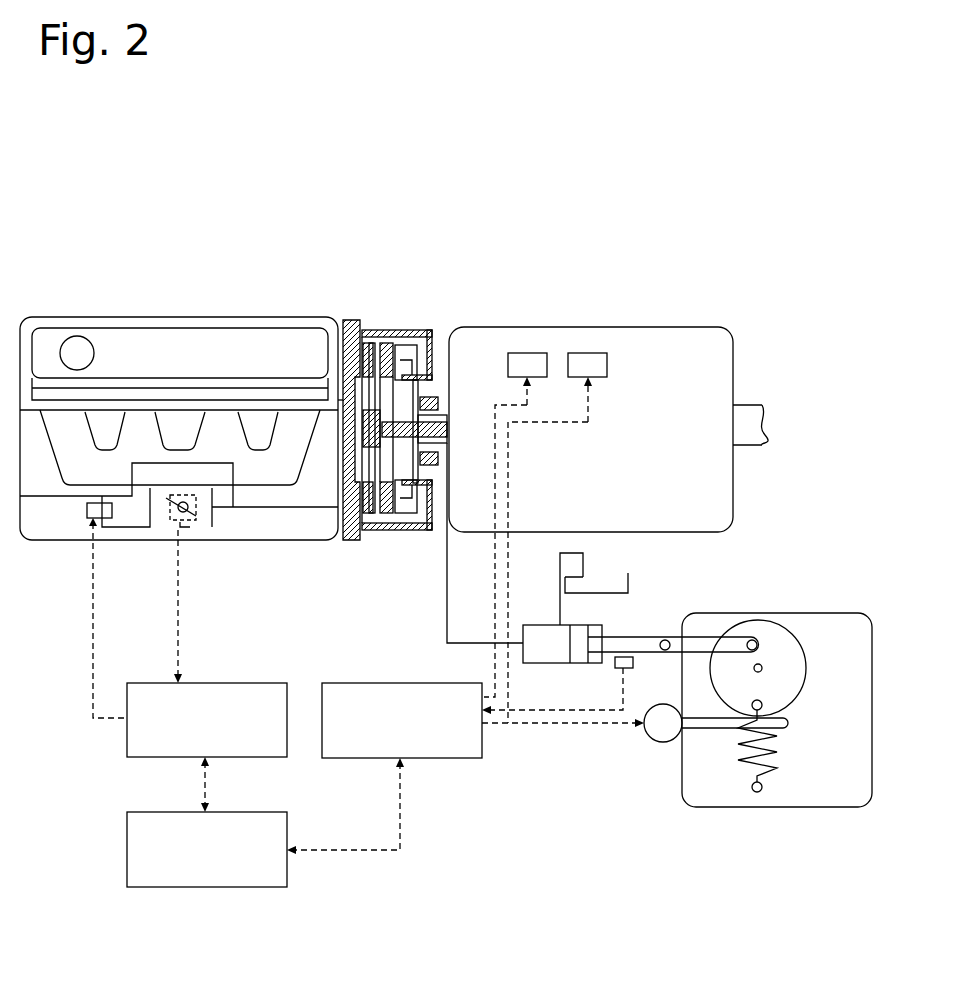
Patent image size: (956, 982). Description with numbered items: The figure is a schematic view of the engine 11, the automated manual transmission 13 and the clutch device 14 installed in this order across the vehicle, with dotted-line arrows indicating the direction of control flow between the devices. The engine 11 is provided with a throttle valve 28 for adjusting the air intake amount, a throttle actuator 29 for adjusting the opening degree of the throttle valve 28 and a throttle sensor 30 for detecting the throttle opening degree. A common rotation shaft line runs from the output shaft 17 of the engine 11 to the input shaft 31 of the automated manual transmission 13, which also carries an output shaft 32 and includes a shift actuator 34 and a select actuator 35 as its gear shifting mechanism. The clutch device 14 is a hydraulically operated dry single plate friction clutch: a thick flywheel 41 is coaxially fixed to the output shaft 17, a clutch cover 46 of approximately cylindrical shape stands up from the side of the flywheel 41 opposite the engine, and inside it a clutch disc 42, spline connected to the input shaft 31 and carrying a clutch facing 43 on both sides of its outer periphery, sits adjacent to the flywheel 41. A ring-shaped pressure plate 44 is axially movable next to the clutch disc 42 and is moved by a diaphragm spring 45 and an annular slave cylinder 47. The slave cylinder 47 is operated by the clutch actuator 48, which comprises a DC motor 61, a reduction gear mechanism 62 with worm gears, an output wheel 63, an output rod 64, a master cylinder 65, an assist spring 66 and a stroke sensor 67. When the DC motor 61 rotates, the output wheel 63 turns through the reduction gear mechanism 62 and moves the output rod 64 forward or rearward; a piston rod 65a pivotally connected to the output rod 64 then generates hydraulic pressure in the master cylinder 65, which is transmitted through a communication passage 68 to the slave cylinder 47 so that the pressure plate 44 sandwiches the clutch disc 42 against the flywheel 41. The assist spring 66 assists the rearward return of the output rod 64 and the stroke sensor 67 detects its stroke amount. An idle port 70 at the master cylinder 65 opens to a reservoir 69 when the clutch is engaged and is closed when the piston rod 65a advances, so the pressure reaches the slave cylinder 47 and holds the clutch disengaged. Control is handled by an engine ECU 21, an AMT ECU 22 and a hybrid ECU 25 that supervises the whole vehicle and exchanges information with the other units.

The engine 11 is at (182, 304).
The automated manual transmission 13 is at (680, 314).
The clutch device 14 is at (405, 311).
The output shaft 17 is at (340, 417).
The engine ECU 21 is at (222, 683).
The AMT ECU 22 is at (370, 683).
The hybrid ECU 25 is at (203, 888).
The throttle valve 28 is at (162, 542).
The throttle actuator 29 is at (124, 540).
The throttle sensor 30 is at (198, 541).
The input shaft 31 is at (442, 425).
The output shaft 32 is at (748, 410).
The shift actuator 34 is at (523, 362).
The select actuator 35 is at (585, 362).
The flywheel 41 is at (347, 540).
The clutch disc 42 is at (373, 540).
The clutch facing 43 is at (377, 343).
The pressure plate 44 is at (387, 540).
The diaphragm spring 45 is at (428, 385).
The clutch cover 46 is at (410, 540).
The slave cylinder 47 is at (438, 397).
The clutch actuator 48 is at (828, 596).
The DC motor 61 is at (652, 740).
The reduction gear mechanism 62 is at (717, 728).
The output wheel 63 is at (772, 640).
The output rod 64 is at (697, 640).
The master cylinder 65 is at (543, 663).
The piston rod 65a is at (632, 643).
The assist spring 66 is at (767, 766).
The stroke sensor 67 is at (613, 664).
The communication passage 68 is at (447, 620).
The reservoir 69 is at (628, 585).
The idle port 70 is at (558, 625).